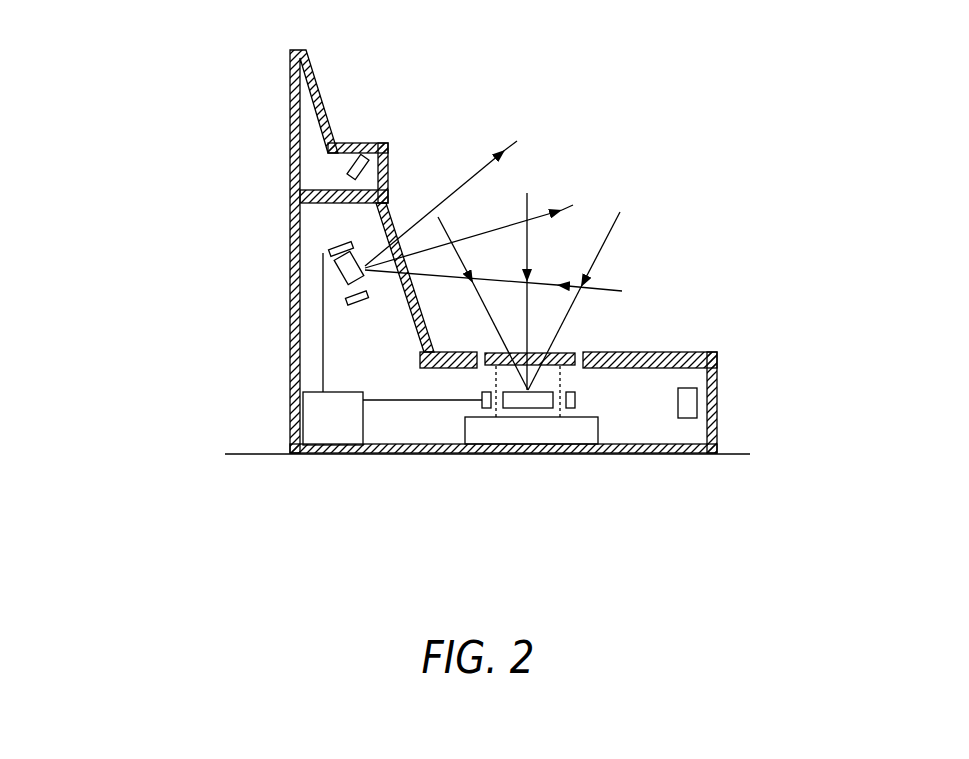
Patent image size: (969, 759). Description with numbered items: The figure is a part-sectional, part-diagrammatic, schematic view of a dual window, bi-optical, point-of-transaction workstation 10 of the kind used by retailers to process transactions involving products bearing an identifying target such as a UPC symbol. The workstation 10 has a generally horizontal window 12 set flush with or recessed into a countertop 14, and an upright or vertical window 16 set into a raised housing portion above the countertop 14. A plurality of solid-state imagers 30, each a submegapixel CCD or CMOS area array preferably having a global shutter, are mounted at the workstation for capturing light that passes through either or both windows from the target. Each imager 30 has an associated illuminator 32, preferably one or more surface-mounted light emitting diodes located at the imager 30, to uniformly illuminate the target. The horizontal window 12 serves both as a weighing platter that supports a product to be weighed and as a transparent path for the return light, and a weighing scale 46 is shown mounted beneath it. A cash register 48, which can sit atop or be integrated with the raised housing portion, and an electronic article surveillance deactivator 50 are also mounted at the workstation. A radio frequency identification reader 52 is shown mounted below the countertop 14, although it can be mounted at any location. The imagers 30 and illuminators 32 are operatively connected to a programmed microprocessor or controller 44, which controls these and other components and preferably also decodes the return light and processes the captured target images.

The point-of-transaction workstation 10 is at (696, 282).
The generally horizontal window 12 is at (565, 352).
The countertop 14 is at (678, 352).
The vertical window 16 is at (403, 222).
The solid-state imager 30 is at (338, 270).
The illuminator 32 is at (330, 248).
The controller 44 is at (323, 418).
The weighing scale 46 is at (470, 428).
The cash register 48 is at (290, 103).
The electronic article surveillance (EAS) deactivator 50 is at (360, 142).
The radio frequency identification (RFID) reader 52 is at (697, 397).